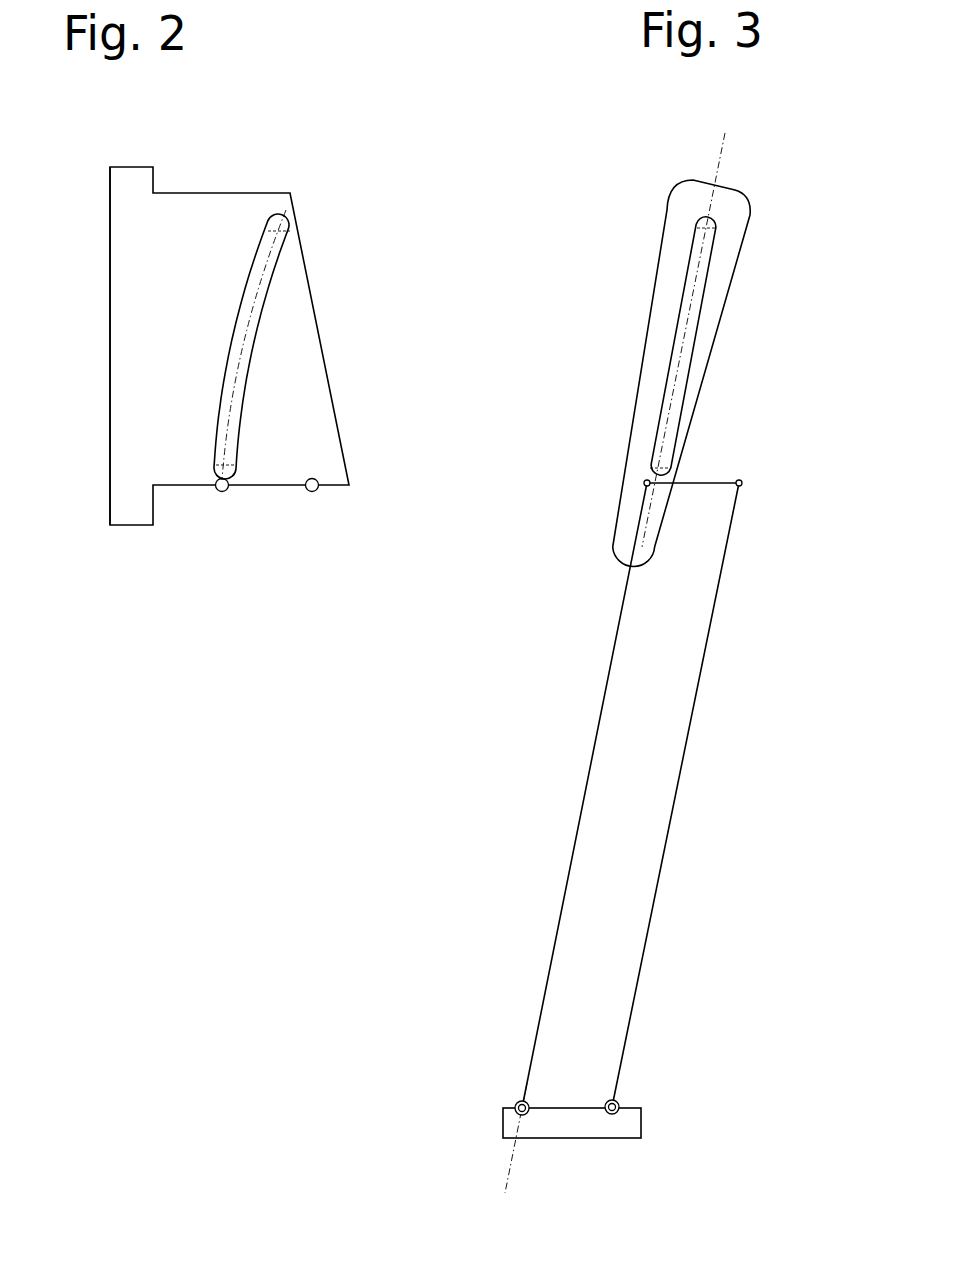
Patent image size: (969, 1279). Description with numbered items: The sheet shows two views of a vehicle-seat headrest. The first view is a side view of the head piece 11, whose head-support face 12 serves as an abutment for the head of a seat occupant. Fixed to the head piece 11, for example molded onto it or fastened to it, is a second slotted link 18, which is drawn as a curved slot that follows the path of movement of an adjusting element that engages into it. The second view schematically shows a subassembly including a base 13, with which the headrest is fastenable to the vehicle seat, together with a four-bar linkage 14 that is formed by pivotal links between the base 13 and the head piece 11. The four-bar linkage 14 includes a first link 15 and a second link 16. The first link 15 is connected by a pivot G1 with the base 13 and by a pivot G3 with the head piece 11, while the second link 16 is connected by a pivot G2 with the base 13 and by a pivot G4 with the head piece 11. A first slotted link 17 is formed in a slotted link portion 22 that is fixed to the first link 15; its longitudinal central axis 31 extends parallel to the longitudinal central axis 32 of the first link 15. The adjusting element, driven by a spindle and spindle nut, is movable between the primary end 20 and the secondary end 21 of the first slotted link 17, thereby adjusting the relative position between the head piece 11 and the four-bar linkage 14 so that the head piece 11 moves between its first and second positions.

In FIG. 2, the head piece 11 is at (203, 218).
In FIG. 2, the head-support face 12 is at (108, 386).
In FIG. 2, the second slotted link 18 is at (255, 332).
In FIG. 3, the base 13 is at (573, 1124).
In FIG. 3, the four-bar linkage 14 is at (609, 852).
In FIG. 3, the first link 15 is at (578, 822).
In FIG. 3, the second link 16 is at (678, 793).
In FIG. 3, the first slotted link 17 is at (695, 312).
In FIG. 3, the end of the slotted link 20 is at (679, 350).
In FIG. 3, the secondary end 21 is at (638, 466).
In FIG. 3, the slotted link portion 22 is at (690, 206).
In FIG. 3, the longitudinal central axis 31 is at (722, 168).
In FIG. 3, the longitudinal central axis 32 is at (505, 1172).
In FIG. 3, the pivot G1 is at (516, 1104).
In FIG. 3, the pivot G2 is at (619, 1103).
In FIG. 3, the pivot G3 is at (645, 486).
In FIG. 3, the pivot G4 is at (741, 486).